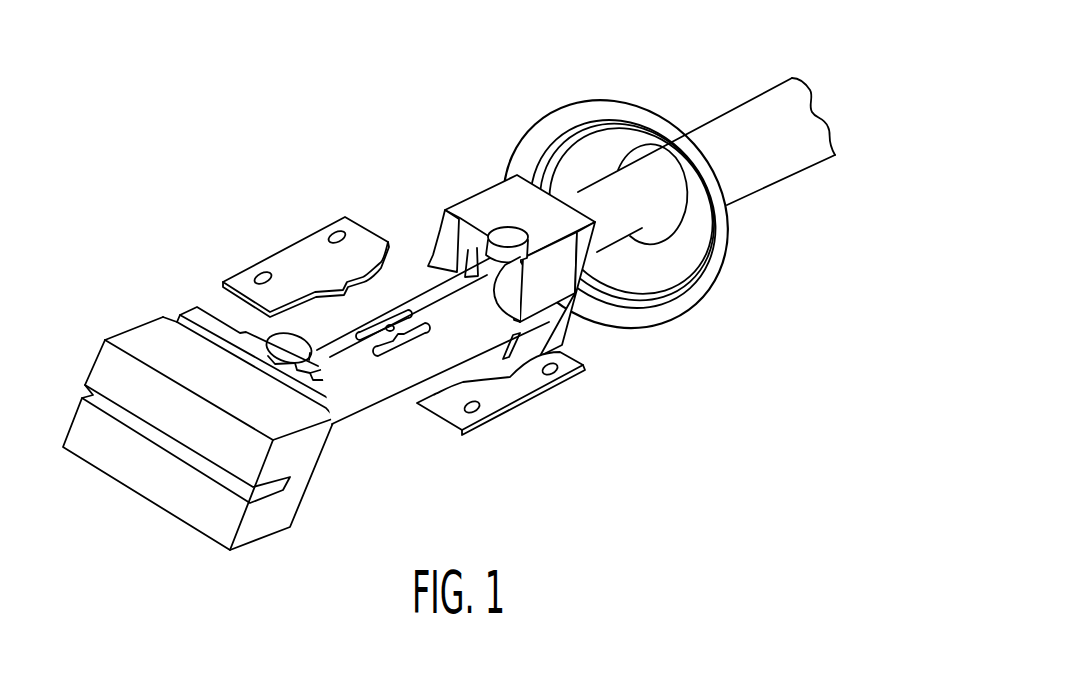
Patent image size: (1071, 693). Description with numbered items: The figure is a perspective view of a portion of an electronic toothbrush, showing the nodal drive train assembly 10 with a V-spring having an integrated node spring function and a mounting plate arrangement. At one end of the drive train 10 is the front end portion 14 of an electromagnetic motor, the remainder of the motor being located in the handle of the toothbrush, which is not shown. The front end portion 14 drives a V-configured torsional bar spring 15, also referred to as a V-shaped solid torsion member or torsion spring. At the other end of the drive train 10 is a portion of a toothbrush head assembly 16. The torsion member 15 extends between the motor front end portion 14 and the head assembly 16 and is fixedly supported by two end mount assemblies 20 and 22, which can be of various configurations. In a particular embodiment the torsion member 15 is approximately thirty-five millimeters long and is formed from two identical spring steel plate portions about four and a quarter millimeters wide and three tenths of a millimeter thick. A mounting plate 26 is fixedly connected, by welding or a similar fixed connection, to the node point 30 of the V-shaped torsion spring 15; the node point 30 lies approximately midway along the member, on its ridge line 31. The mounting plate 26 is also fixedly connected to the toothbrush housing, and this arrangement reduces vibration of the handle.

The nodal drive train assembly 10 is at (363, 195).
The front end portion of an electromagnetic motor 14 is at (128, 312).
The V-configured torsional bar spring 15 is at (400, 410).
The toothbrush head assembly 16 is at (657, 108).
The end mount assembly 20 is at (348, 400).
The end mount assembly 22 is at (470, 203).
The mounting plate 26 is at (568, 365).
The node point 30 is at (386, 327).
The ridge line 31 is at (430, 300).